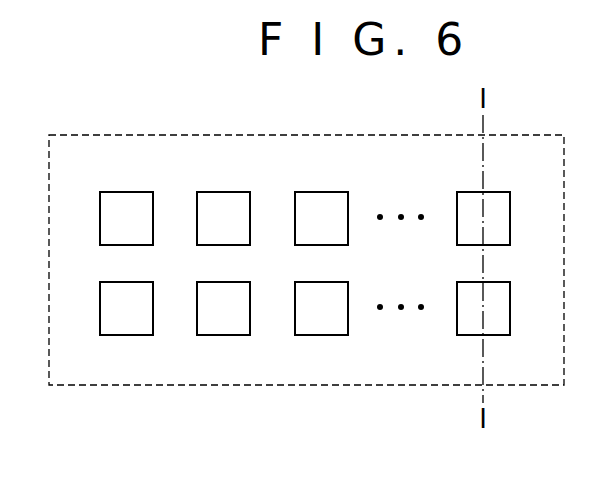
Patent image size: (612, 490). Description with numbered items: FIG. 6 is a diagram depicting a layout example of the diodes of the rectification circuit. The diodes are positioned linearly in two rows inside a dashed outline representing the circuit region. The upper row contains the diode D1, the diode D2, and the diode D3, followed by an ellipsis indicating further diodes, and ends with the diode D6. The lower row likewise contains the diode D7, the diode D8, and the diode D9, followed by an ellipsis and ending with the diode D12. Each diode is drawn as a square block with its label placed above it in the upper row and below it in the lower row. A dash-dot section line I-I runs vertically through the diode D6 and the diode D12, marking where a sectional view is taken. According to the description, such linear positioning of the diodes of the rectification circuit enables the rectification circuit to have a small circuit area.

The diode D1 is at (126, 203).
The diode D2 is at (223, 203).
The diode D3 is at (321, 203).
The diode D6 is at (489, 203).
The diode D7 is at (126, 325).
The diode D8 is at (223, 325).
The diode D9 is at (321, 325).
The diode D12 is at (499, 325).